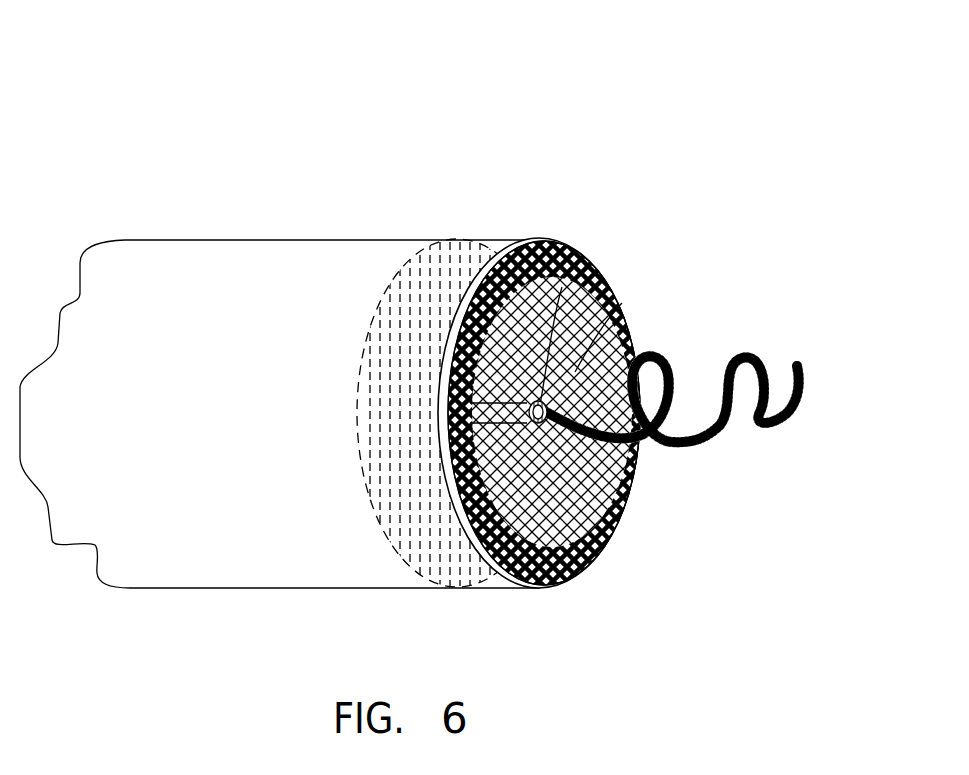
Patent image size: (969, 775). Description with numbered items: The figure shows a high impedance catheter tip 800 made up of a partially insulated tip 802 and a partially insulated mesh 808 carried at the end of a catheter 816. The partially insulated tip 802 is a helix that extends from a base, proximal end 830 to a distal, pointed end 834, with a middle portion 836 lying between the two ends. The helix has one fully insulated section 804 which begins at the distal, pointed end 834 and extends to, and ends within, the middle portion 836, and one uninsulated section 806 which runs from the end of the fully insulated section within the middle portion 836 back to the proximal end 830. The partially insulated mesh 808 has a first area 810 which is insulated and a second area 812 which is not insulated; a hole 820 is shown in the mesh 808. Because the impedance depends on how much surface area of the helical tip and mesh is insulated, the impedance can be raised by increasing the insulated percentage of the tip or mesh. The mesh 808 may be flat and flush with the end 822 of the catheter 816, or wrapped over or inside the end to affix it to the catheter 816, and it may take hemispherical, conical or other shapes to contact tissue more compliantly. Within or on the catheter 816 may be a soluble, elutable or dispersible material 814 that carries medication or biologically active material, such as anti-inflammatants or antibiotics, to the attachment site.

The high impedance catheter tip 800 is at (244, 95).
The partially insulated tip 802 is at (756, 470).
The fully insulated section 804 is at (803, 427).
The uninsulated section 806 is at (667, 462).
The partially insulated mesh 808 is at (659, 237).
The first area 810 is at (600, 556).
The second area 812 is at (620, 304).
The material 814 is at (452, 262).
The catheter 816 is at (290, 240).
The hole 820 is at (587, 261).
The end of the catheter 822 is at (520, 589).
The proximal end 830 is at (580, 330).
The distal end 834 is at (797, 378).
The middle portion 836 is at (699, 391).